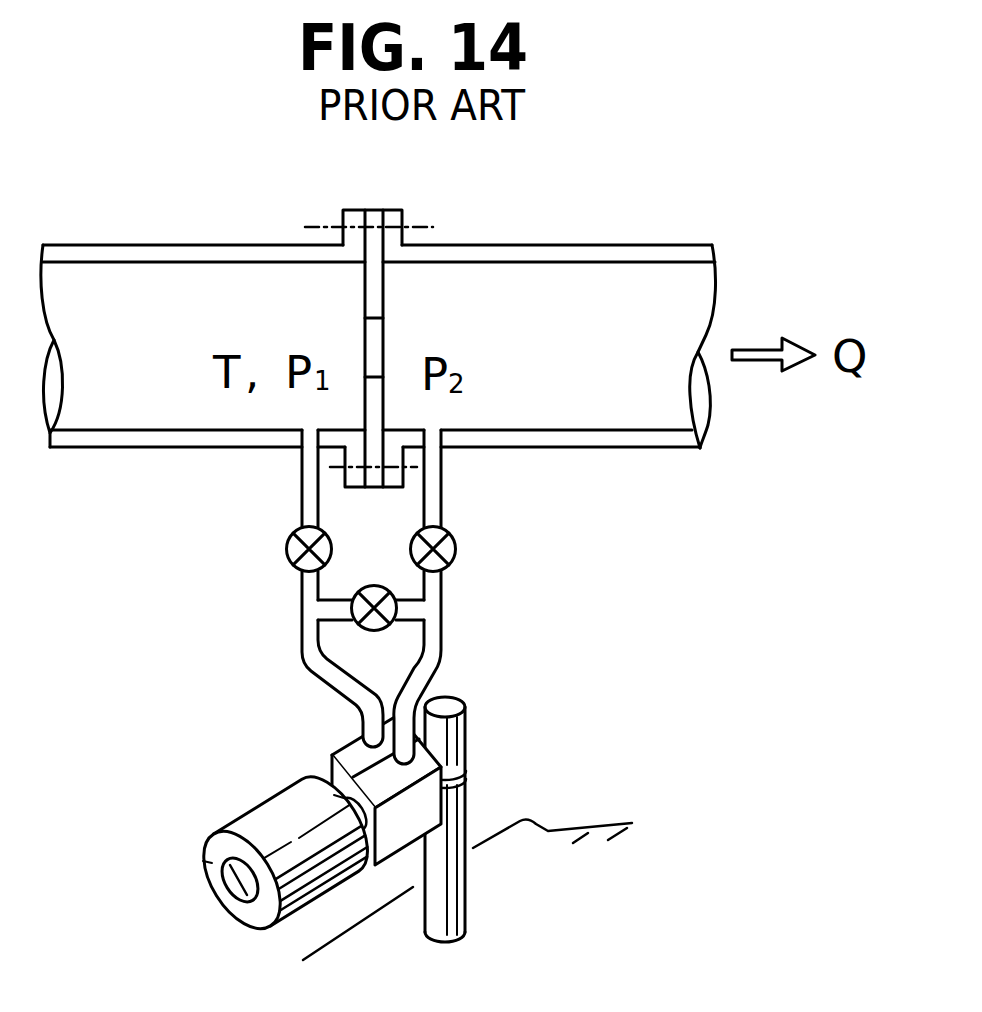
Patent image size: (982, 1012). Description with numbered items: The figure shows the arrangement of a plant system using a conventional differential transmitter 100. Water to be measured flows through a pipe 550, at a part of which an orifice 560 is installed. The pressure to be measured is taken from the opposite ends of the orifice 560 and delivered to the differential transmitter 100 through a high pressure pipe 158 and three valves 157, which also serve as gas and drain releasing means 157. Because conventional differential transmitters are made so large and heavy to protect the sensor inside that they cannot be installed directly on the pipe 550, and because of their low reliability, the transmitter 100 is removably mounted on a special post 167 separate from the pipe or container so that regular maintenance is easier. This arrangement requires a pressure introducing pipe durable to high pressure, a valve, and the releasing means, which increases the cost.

The pipe 550 is at (158, 243).
The orifice 560 is at (385, 308).
The high pressure pipe 158 is at (302, 480).
The three valves 157 is at (435, 579).
The special post 167 is at (467, 728).
The differential transmitter 100 is at (208, 860).